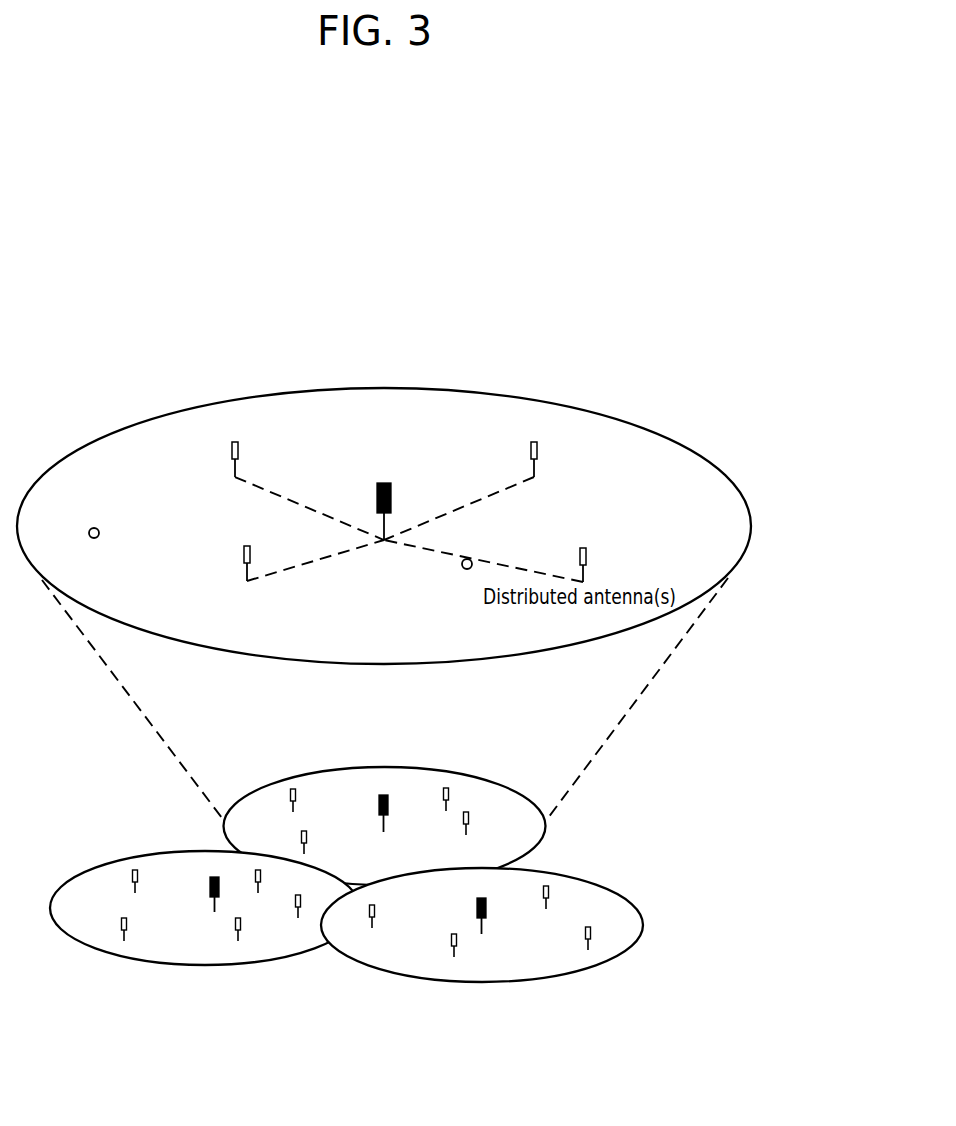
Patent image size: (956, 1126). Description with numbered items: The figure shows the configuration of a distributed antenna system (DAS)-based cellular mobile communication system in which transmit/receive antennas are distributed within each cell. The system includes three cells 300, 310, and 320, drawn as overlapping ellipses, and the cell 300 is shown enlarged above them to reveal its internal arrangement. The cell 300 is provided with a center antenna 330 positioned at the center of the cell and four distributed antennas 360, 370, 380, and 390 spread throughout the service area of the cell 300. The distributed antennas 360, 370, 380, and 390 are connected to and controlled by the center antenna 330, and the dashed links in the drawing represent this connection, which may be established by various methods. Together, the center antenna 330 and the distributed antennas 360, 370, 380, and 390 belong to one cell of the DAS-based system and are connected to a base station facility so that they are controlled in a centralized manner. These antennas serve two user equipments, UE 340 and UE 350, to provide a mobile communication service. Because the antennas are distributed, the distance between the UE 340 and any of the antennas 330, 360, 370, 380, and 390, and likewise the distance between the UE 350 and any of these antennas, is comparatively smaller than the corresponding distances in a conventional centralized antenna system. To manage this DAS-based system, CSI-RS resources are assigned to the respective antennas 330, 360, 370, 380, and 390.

The cell 300 is at (385, 766).
The cell 310 is at (150, 853).
The cell 320 is at (590, 879).
The center antenna 330 is at (383, 481).
The UE 340 is at (108, 498).
The UE 350 is at (492, 540).
The distributed antenna 360 is at (588, 555).
The distributed antenna 370 is at (539, 449).
The distributed antenna 380 is at (240, 449).
The distributed antenna 390 is at (252, 552).